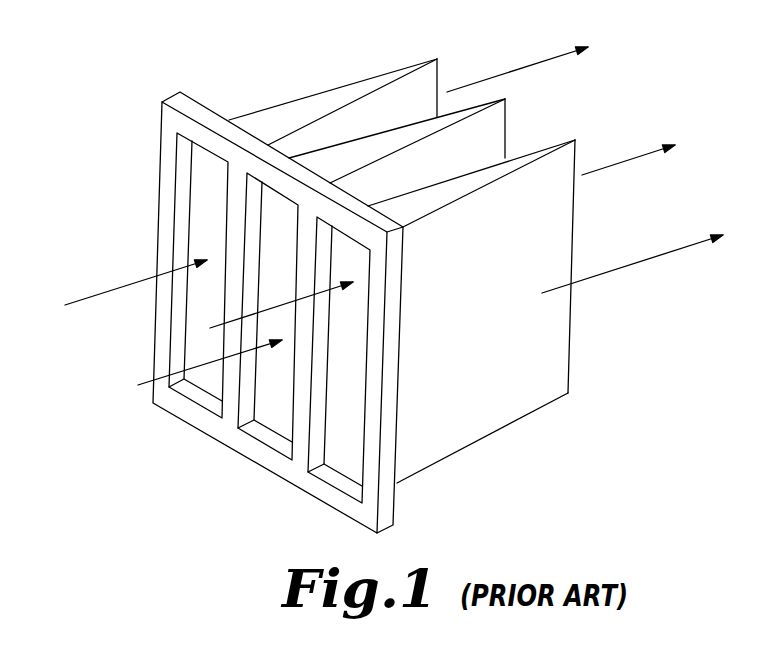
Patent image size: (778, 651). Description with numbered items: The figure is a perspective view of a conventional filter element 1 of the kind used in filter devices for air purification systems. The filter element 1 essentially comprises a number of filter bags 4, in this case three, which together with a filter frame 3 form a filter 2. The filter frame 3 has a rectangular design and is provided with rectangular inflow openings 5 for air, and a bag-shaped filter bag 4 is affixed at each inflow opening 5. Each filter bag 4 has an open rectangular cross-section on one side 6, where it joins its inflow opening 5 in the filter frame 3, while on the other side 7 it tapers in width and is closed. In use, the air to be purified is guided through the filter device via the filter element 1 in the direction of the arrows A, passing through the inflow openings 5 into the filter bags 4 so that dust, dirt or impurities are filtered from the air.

The filter element 1 is at (85, 58).
The filter 2 is at (365, 68).
The filter frame 3 is at (180, 192).
The filter bag 4 is at (285, 124).
The inflow opening 5 is at (192, 308).
The open side of filter bag 6 is at (238, 119).
The closed tapering side of filter bag 7 is at (440, 76).
The arrows indicating air flow direction A is at (207, 322).